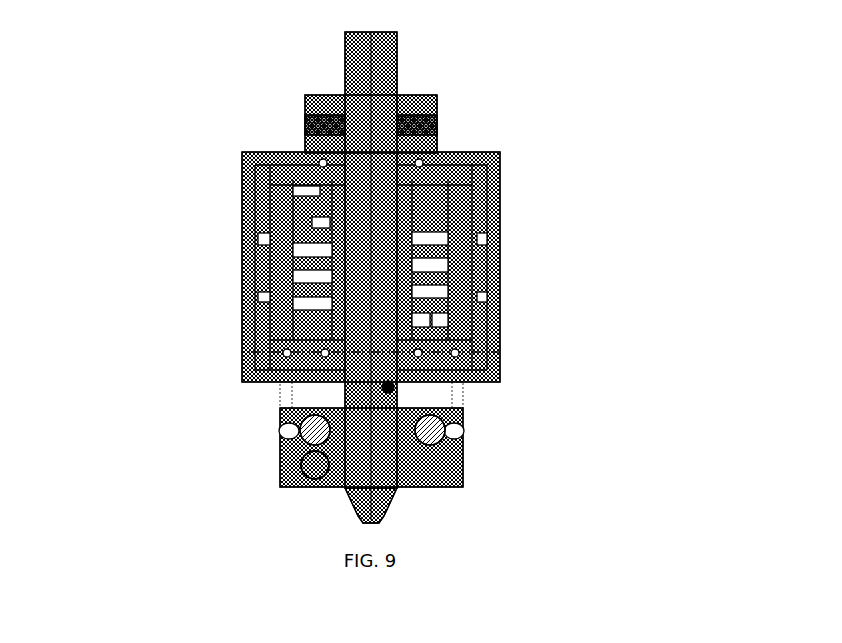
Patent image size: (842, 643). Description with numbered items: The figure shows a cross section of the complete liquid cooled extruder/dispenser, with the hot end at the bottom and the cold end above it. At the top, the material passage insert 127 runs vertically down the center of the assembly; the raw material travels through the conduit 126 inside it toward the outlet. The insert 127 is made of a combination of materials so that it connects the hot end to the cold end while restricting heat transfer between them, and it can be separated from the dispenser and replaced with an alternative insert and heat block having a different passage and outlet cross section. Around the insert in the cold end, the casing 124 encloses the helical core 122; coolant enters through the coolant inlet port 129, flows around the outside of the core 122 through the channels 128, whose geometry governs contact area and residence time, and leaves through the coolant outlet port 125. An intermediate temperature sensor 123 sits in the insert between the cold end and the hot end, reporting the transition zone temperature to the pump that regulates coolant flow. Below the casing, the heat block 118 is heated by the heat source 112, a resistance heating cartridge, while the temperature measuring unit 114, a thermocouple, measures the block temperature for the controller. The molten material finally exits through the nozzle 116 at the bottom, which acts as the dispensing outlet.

The heat source 112 is at (460, 443).
The temperature measuring unit 114 is at (305, 465).
The nozzle 116 is at (365, 528).
The heat block 118 is at (460, 487).
The core 122 is at (437, 215).
The intermediate temperature sensor 123 is at (392, 387).
The casing 124 is at (493, 150).
The coolant outlet port 125 is at (310, 220).
The conduit 126 is at (370, 108).
The material passage insert 127 is at (398, 45).
The channels 128 is at (305, 277).
The coolant inlet port 129 is at (423, 315).